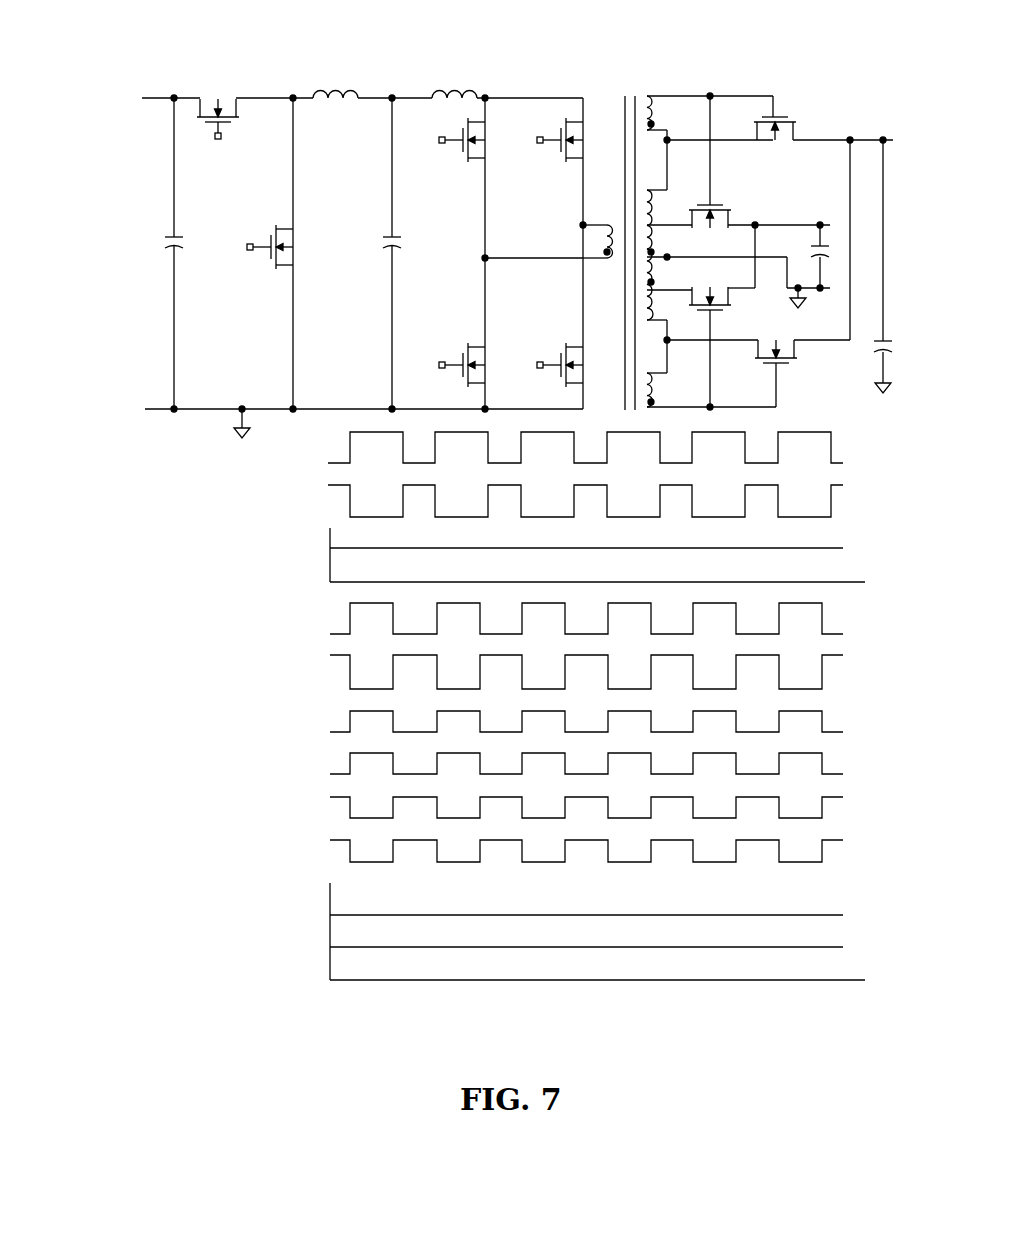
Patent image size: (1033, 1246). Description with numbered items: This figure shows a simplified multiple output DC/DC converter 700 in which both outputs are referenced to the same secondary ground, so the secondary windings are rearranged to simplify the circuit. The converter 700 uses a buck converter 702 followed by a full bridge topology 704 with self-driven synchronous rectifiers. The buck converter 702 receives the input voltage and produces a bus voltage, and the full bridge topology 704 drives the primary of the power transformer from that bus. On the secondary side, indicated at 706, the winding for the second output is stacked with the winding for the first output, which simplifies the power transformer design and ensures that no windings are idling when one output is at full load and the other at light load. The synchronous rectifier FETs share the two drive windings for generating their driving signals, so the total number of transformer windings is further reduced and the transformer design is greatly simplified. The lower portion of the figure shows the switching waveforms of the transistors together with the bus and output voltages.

The multiple output DC/DC converter 700 is at (130, 545).
The buck converter 702 is at (402, 64).
The full bridge topology 704 is at (580, 60).
The secondary rectifier and output stage 706 is at (640, 62).